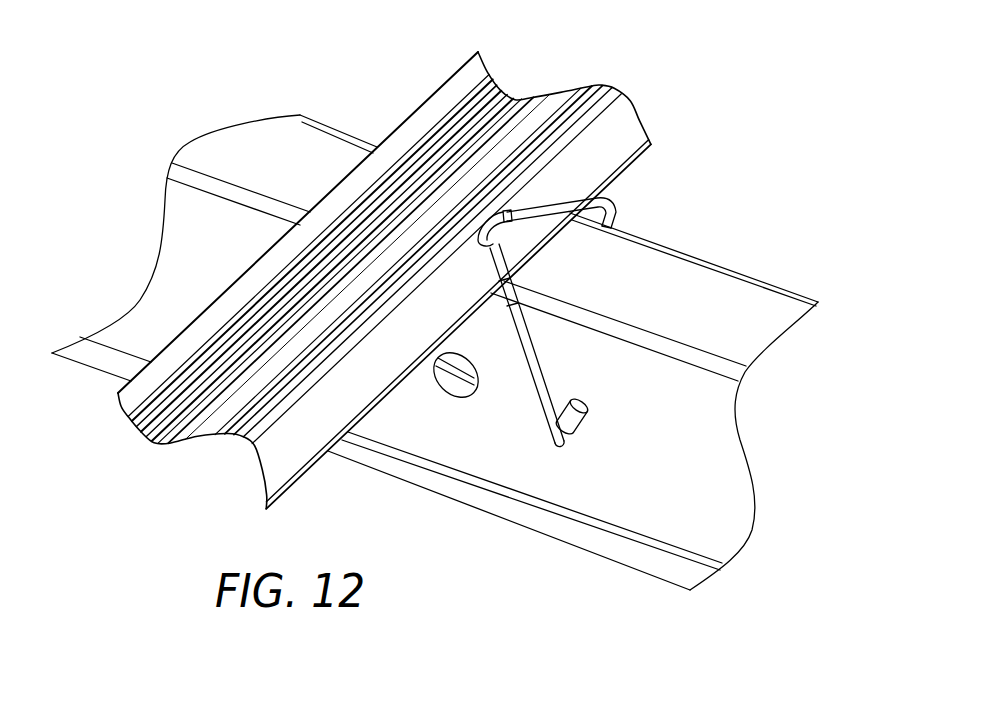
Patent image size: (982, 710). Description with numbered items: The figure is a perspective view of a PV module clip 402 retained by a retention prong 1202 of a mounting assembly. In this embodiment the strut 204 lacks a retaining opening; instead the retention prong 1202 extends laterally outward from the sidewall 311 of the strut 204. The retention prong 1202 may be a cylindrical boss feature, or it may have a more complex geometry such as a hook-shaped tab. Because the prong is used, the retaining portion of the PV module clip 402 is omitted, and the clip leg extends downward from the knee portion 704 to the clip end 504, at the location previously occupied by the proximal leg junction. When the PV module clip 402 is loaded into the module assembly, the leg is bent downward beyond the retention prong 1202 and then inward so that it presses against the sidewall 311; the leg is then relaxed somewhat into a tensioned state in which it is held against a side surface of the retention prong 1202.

The strut 204 is at (460, 352).
The sidewall 311 is at (460, 352).
The PV module clip 402 is at (608, 205).
The knee portion 704 is at (518, 288).
The retention prong 1202 is at (580, 433).
The clip end 504 is at (540, 516).